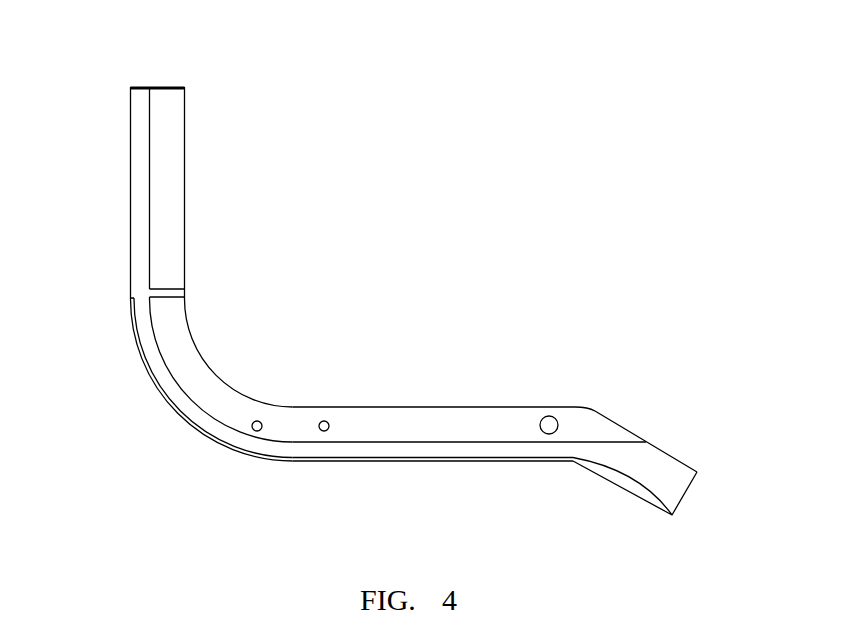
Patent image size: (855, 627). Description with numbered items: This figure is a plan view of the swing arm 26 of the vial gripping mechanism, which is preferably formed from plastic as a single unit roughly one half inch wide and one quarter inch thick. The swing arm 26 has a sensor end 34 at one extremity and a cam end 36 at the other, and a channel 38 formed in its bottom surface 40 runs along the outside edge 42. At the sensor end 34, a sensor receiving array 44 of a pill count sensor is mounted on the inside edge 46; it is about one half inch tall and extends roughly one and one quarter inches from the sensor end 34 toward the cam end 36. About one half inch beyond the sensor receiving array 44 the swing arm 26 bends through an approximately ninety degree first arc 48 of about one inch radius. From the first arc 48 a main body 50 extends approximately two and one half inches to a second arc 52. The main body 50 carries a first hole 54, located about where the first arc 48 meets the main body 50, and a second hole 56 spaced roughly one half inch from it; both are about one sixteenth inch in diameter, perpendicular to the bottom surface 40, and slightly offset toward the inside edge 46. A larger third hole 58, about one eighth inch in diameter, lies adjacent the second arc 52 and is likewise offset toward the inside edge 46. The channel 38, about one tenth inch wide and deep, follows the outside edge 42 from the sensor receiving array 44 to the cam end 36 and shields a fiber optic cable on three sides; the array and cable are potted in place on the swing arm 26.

The swing arm 26 is at (413, 273).
The sensor end 34 is at (200, 155).
The cam end 36 is at (690, 504).
The channel 38 is at (455, 453).
The bottom surface 40 is at (172, 352).
The outside edge 42 is at (130, 297).
The sensor receiving array 44 is at (168, 158).
The inside edge 46 is at (222, 383).
The first arc 48 is at (172, 422).
The main body 50 is at (370, 403).
The second arc 52 is at (598, 400).
The first hole 54 is at (257, 432).
The second hole 56 is at (324, 432).
The third hole 58 is at (546, 417).